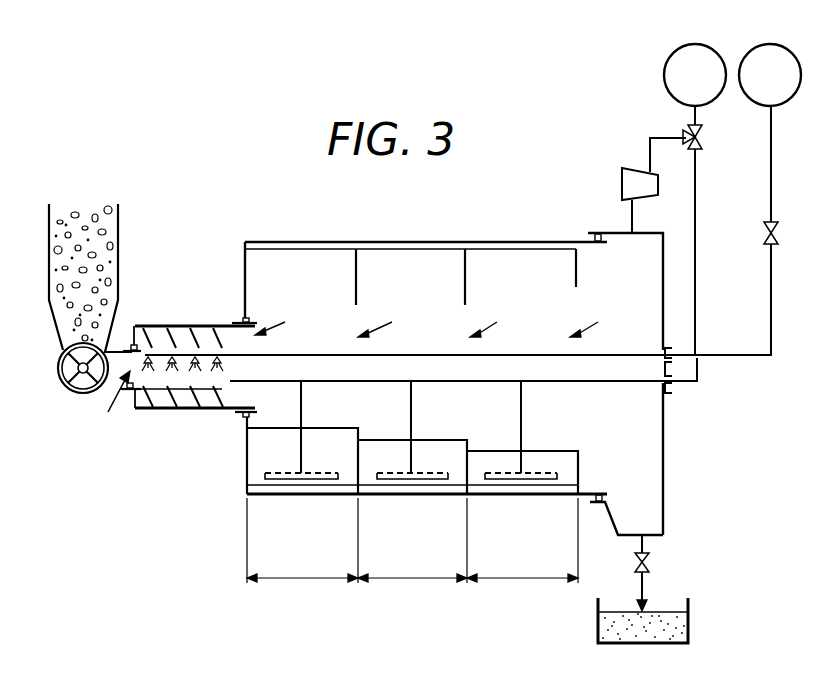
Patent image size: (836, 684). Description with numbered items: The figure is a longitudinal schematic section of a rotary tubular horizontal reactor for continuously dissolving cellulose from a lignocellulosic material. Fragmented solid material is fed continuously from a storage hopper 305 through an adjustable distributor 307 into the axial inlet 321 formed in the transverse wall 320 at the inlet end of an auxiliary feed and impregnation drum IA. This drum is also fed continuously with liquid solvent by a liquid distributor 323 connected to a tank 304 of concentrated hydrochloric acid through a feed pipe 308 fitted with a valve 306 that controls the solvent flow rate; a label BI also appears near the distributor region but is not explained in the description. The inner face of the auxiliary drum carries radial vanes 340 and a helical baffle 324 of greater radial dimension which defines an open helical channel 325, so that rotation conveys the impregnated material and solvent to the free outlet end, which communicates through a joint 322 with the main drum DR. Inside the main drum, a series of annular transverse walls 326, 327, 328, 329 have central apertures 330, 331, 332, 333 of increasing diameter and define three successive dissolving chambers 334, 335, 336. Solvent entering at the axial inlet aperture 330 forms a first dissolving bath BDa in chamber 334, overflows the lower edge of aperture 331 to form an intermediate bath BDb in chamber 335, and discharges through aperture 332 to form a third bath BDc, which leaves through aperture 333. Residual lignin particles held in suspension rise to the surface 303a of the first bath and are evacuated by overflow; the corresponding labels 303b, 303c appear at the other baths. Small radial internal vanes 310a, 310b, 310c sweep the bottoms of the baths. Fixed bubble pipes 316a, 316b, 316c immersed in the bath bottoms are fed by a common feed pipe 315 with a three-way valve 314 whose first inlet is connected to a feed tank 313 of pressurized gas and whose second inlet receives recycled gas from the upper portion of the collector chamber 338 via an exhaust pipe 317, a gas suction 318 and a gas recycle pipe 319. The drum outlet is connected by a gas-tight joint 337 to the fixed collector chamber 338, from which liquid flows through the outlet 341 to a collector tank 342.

The storage hopper 305 is at (118, 218).
The adjustable distributor 307 is at (80, 385).
The transverse wall 320 is at (133, 324).
The radial vanes 340 is at (203, 324).
The auxiliary feed and impregnation drum IA is at (173, 324).
The joint 322 is at (248, 319).
The liquid distributor 323 is at (232, 355).
The axial inlet 321 is at (175, 404).
The helical channel 325 is at (194, 396).
The binder inlet BI is at (210, 392).
The helical baffle 324 is at (222, 392).
The main drum DR is at (340, 242).
The annular transverse wall 326 is at (245, 262).
The small radial internal vanes 310a is at (275, 242).
The small radial internal vanes 310b is at (392, 242).
The small radial internal vanes 310c is at (490, 242).
The annular transverse wall 327 is at (356, 275).
The annular transverse wall 328 is at (465, 275).
The annular transverse wall 329 is at (576, 278).
The central aperture 330 is at (287, 322).
The central aperture 331 is at (392, 323).
The central aperture 332 is at (501, 323).
The central aperture 333 is at (603, 323).
The exhaust pipe 317 is at (632, 213).
The gas suction 318 is at (622, 186).
The gas recycle pipe 319 is at (668, 137).
The three-way valve 314 is at (703, 137).
The feed tank 313 is at (695, 46).
The tank of concentrated hydrochloric acid 304 is at (770, 46).
The common feed pipe 315 is at (696, 286).
The valve 306 is at (763, 233).
The feed pipe 308 is at (771, 320).
The surface 303a is at (335, 428).
The downcomer duct b 303b is at (437, 440).
The downcomer duct c 303c is at (551, 451).
The dissolving bath BDa is at (427, 455).
The intermediate dissolving bath BDb is at (412, 467).
The third dissolving bath BDc is at (522, 472).
The fixed bubble pipe 316a is at (332, 480).
The fixed bubble pipe 316b is at (441, 480).
The fixed bubble pipe 316c is at (549, 480).
The first dissolving chamber 334 is at (302, 540).
The intermediate dissolving chamber 335 is at (412, 540).
The last dissolving chamber 336 is at (522, 540).
The gas-tight joint 337 is at (604, 497).
The fixed collector chamber 338 is at (665, 443).
The outlet 341 is at (645, 540).
The collector tank 342 is at (690, 622).